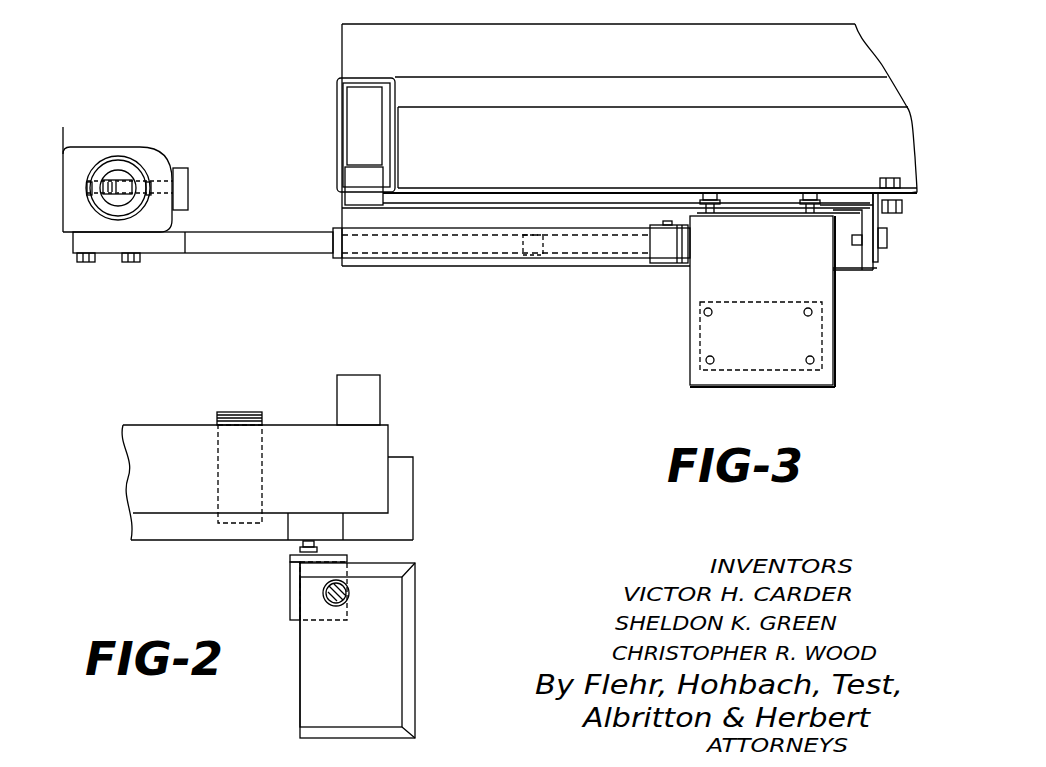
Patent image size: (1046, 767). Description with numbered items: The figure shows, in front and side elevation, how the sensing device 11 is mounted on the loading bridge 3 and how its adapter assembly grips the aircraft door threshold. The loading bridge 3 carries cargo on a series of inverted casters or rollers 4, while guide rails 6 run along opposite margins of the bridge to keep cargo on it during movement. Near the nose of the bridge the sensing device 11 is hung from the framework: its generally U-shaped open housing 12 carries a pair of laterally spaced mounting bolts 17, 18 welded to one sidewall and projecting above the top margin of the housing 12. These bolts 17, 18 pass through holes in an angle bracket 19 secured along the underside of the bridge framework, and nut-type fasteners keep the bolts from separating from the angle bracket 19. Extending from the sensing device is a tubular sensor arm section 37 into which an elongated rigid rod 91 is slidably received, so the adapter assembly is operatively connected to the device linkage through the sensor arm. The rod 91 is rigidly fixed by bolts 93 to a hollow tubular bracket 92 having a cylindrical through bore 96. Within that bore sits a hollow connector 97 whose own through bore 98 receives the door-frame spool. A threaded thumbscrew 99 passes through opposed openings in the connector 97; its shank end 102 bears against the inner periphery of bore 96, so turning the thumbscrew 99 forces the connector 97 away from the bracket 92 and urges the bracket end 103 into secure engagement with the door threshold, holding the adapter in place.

In FIG. 3, the loading bridge 3 is at (325, 121).
In FIG. 2, the loading bridge 3 is at (329, 410).
In FIG. 2, the inverted casters or rollers 4 is at (237, 414).
In FIG. 3, the guide rails 6 is at (748, 33).
In FIG. 2, the guide rails 6 is at (375, 393).
In FIG. 3, the sensing device 11 is at (688, 323).
In FIG. 2, the sensing device 11 is at (417, 624).
In FIG. 3, the housing 12 is at (766, 280).
In FIG. 3, the mounting bolt 17 is at (708, 193).
In FIG. 2, the mounting bolt 17 is at (308, 542).
In FIG. 3, the mounting bolt 18 is at (808, 195).
In FIG. 3, the angle bracket 19 is at (517, 218).
In FIG. 2, the angle bracket 19 is at (290, 560).
In FIG. 3, the tubular sensor arm section 37 is at (438, 247).
In FIG. 2, the tubular sensor arm section 37 is at (349, 592).
In FIG. 3, the rigid rod 91 is at (225, 252).
In FIG. 2, the rigid rod 91 is at (337, 604).
In FIG. 3, the tubular bracket 92 is at (151, 153).
In FIG. 3, the bolts 93 is at (137, 259).
In FIG. 3, the through bore 96 is at (152, 200).
In FIG. 3, the hollow connector 97 is at (89, 185).
In FIG. 3, the through bore 98 is at (127, 183).
In FIG. 3, the thumbscrew 99 is at (185, 172).
In FIG. 3, the shank end 102 is at (89, 185).
In FIG. 3, the bracket end 103 is at (62, 185).